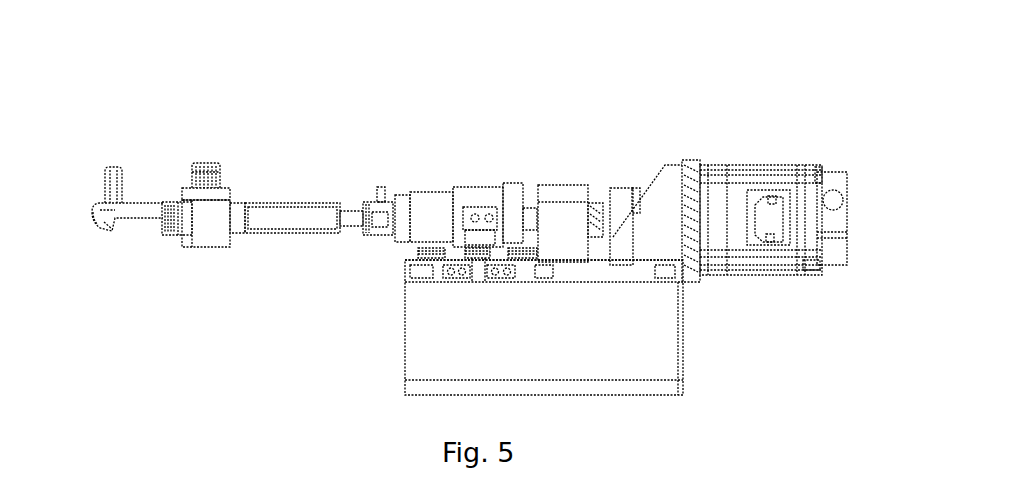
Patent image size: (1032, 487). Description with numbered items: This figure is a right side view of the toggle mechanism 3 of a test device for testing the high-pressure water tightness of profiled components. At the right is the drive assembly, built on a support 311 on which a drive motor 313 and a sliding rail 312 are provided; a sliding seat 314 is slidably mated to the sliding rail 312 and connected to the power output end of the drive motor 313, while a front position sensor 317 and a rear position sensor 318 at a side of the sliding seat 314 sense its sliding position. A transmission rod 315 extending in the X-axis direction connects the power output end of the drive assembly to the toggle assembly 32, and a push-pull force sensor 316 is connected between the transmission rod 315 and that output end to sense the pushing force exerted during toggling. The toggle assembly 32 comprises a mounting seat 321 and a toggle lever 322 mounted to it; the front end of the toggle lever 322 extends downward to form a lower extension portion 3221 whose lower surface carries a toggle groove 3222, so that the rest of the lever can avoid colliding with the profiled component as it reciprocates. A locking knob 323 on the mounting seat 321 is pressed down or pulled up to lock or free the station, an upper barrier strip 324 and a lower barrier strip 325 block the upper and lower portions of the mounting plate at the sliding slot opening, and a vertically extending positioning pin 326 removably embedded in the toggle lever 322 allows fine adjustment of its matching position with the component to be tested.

The toggle mechanism 3 is at (510, 53).
The support 311 is at (673, 330).
The sliding rail 312 is at (415, 253).
The drive motor 313 is at (837, 172).
The sliding seat 314 is at (480, 195).
The transmission rod 315 is at (278, 205).
The push-pull force sensor 316 is at (385, 197).
The front position sensor 317 is at (458, 282).
The rear position sensor 318 is at (508, 283).
The toggle assembly 32 is at (206, 291).
The mounting seat 321 is at (233, 243).
The toggle lever 322 is at (100, 200).
The lower extension portion 3221 is at (92, 218).
The toggle groove 3222 is at (112, 231).
The locking knob 323 is at (213, 163).
The upper barrier strip 324 is at (183, 170).
The lower barrier strip 325 is at (182, 243).
The positioning pin 326 is at (110, 162).